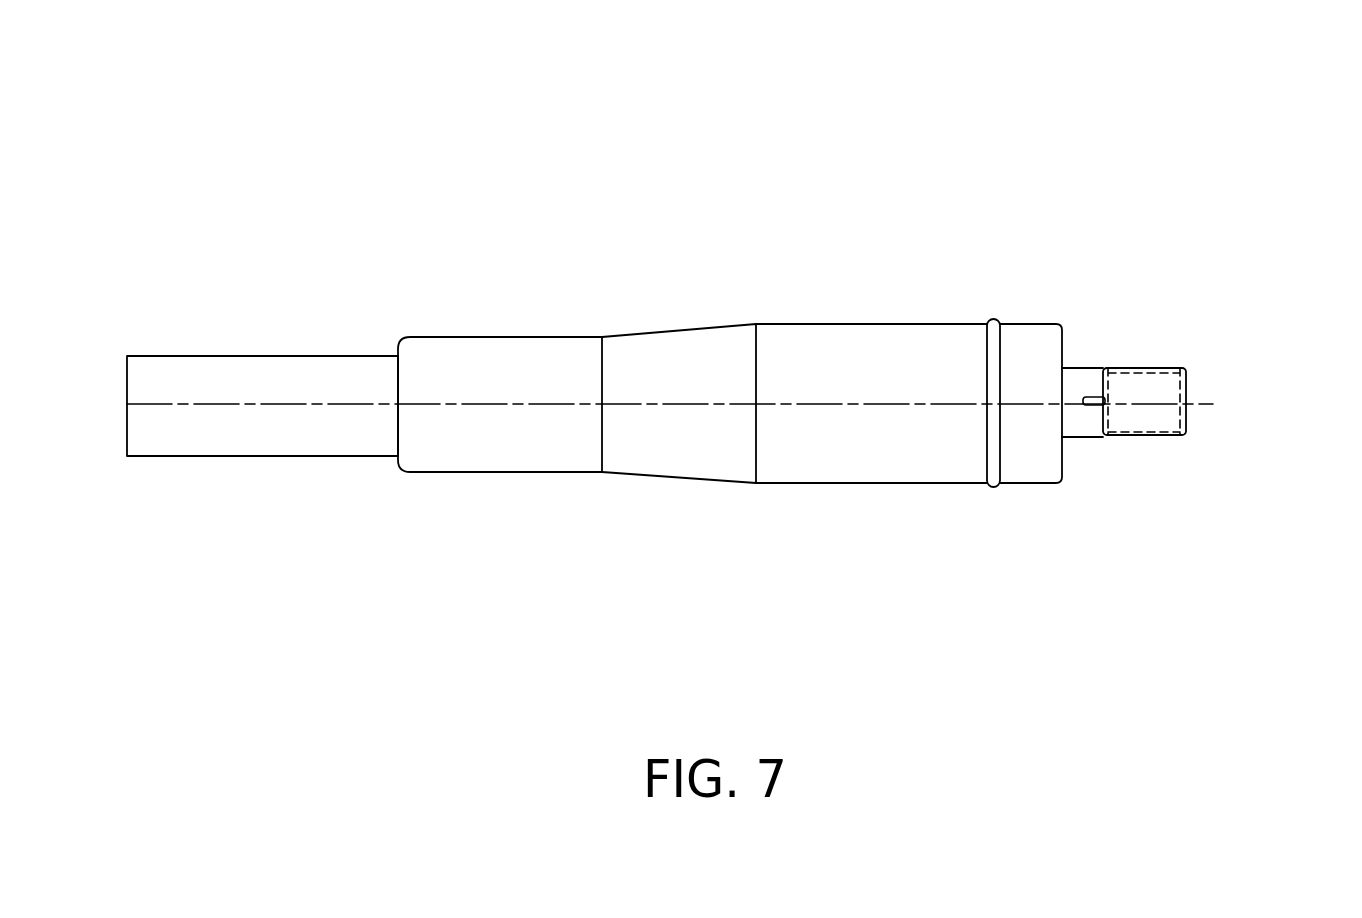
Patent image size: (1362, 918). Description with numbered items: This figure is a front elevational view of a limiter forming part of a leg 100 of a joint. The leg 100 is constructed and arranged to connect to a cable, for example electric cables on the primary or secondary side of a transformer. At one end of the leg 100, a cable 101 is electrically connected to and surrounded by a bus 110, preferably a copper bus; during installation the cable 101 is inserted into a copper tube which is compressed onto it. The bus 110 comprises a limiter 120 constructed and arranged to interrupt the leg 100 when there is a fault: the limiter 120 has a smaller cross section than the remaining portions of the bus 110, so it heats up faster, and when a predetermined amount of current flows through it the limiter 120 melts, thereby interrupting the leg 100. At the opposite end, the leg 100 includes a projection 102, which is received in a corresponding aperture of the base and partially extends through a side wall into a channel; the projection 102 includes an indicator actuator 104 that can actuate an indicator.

The leg 100 is at (712, 329).
The cable 101 is at (183, 440).
The bus 110 is at (512, 473).
The limiter 120 is at (713, 473).
The projection 102 is at (1131, 368).
The indicator actuator 104 is at (1190, 400).